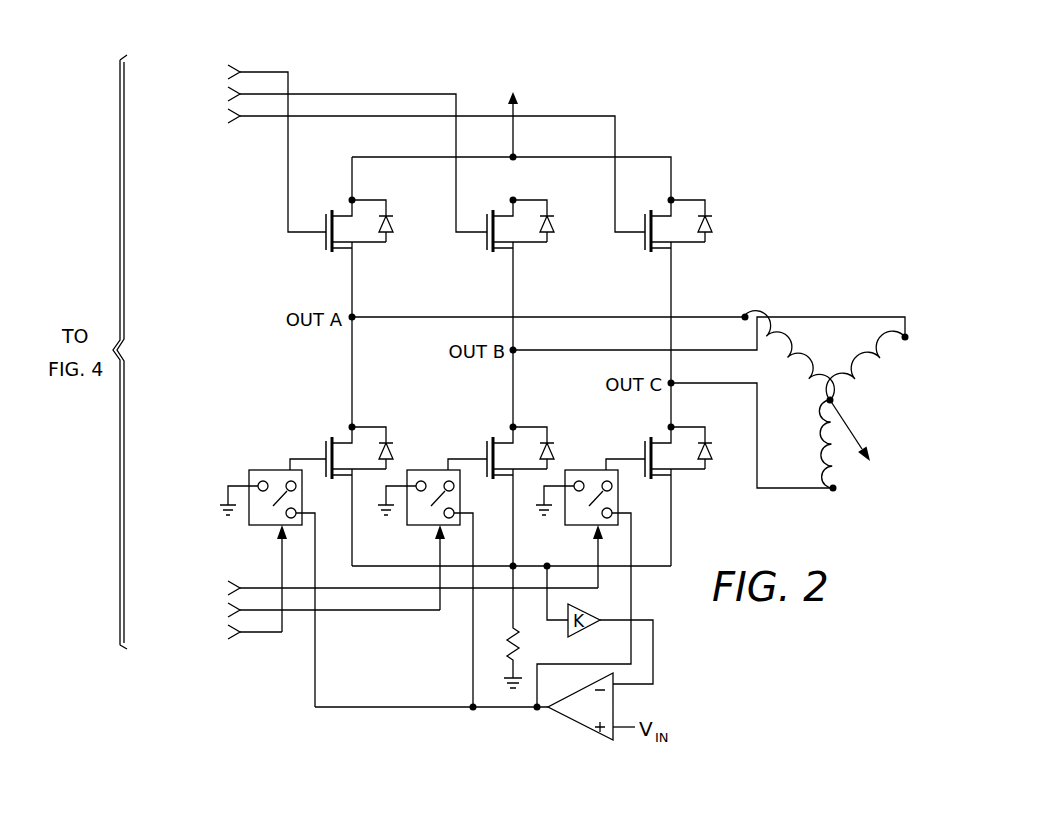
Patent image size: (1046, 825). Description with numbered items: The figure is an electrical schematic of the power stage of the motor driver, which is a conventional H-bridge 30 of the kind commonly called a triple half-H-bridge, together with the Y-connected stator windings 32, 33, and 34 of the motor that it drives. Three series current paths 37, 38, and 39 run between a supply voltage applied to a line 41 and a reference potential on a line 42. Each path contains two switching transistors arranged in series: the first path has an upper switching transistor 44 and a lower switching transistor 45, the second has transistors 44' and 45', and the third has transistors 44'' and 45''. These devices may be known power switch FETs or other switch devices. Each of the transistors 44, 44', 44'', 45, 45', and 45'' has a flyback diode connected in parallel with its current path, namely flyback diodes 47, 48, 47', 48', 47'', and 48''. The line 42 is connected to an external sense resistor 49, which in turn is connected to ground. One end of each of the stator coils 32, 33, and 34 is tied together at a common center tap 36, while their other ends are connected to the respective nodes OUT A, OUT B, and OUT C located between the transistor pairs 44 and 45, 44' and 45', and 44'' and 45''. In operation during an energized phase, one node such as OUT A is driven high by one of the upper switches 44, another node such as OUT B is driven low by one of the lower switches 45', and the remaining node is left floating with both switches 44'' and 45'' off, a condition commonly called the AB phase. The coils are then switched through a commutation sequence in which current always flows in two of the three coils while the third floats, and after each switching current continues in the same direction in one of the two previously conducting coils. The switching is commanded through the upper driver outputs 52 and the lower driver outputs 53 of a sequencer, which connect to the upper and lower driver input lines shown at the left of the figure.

The H-bridge 30 is at (775, 77).
The stator winding 32 is at (800, 351).
The stator winding 33 is at (868, 347).
The stator winding 34 is at (817, 455).
The common center tap 36 is at (828, 400).
The series current path 37 is at (424, 82).
The series current path 38 is at (583, 104).
The series current path 39 is at (681, 183).
The line 41 is at (603, 163).
The line 42 is at (485, 565).
The switching transistor 44 is at (329, 257).
The switching transistor 44' is at (487, 274).
The switching transistor 44'' is at (645, 290).
The switching transistor 45 is at (303, 512).
The switching transistor 45' is at (462, 528).
The switching transistor 45'' is at (620, 545).
The flyback diode 47 is at (386, 207).
The flyback diode 47' is at (548, 207).
The flyback diode 47'' is at (710, 207).
The flyback diode 48 is at (388, 433).
The flyback diode 48' is at (551, 433).
The flyback diode 48'' is at (712, 431).
The sense resistor 49 is at (512, 640).
The upper driver outputs 52 is at (262, 57).
The lower driver outputs 53 is at (258, 646).